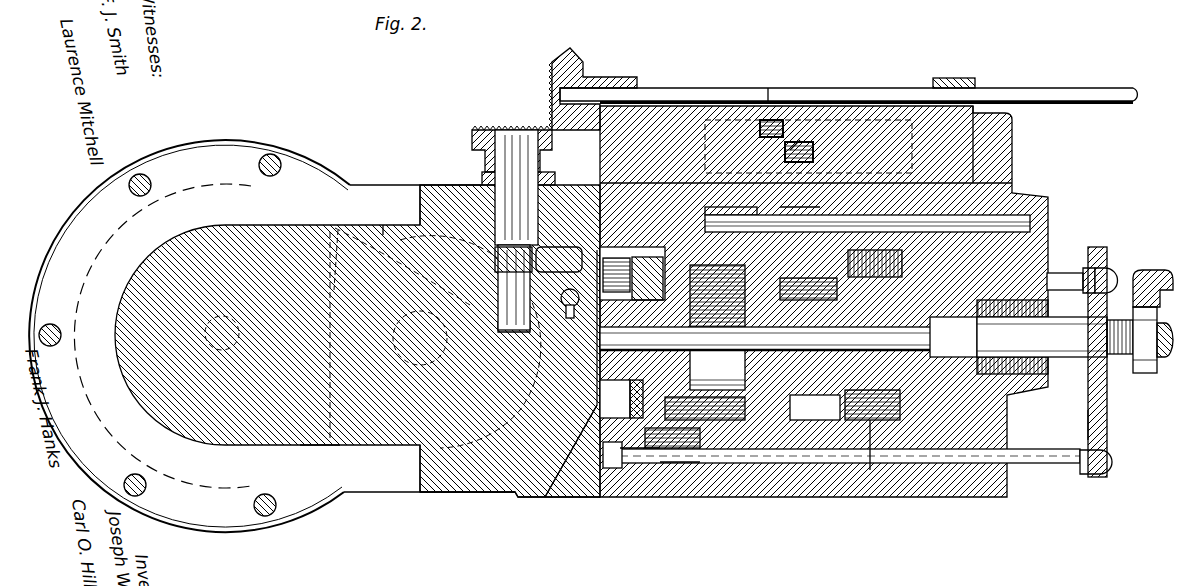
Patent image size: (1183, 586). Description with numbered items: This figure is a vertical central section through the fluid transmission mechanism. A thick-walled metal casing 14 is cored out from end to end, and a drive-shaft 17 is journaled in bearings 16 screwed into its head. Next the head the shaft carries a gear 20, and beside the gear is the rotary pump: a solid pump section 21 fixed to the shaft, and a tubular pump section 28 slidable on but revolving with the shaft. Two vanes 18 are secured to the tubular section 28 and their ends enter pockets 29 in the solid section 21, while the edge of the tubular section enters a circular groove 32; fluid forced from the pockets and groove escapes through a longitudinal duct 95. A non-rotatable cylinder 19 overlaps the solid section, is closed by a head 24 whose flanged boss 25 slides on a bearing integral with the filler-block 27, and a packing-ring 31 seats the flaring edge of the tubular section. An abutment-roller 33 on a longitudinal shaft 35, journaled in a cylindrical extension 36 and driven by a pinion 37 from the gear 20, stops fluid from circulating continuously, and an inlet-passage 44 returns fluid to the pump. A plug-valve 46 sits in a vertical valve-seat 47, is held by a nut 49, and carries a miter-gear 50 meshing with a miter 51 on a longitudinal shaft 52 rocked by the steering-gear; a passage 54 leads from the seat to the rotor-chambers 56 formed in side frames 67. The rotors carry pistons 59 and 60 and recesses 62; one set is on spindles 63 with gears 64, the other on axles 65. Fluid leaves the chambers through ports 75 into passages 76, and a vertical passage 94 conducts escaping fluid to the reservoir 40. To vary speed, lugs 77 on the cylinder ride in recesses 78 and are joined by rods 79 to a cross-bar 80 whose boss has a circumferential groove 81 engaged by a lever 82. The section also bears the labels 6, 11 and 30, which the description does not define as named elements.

The valve disc 6 is at (493, 262).
The rod 11 is at (788, 278).
The casing 14 is at (809, 112).
The bearings 16 is at (1048, 388).
The drive-shaft 17 is at (1055, 337).
The vanes 18 is at (788, 470).
The cylinder 19 is at (720, 450).
The gear 20 is at (989, 337).
The solid pump section 21 is at (884, 300).
The head 24 is at (790, 186).
The flanged boss 25 is at (592, 450).
The filler-block 27 is at (490, 455).
The tubular pump section 28 is at (735, 430).
The pockets 29 is at (872, 432).
The spring 30 is at (717, 327).
The packing-ring 31 is at (655, 452).
The circular groove 32 is at (816, 300).
The abutment-roller 33 is at (850, 172).
The longitudinal shaft 35 is at (1030, 225).
The cylindrical extension 36 is at (650, 220).
The pinion 37 is at (1000, 196).
The reservoir 40 is at (672, 88).
The inlet-passage 44 is at (758, 128).
The plug-valve 46 is at (516, 230).
The valve-seat 47 is at (505, 334).
The nut 49 is at (482, 178).
The miter-gear 50 is at (476, 128).
The miter 51 is at (560, 60).
The longitudinal shaft 52 is at (768, 88).
The passage 54 is at (383, 225).
The rotor-chambers 56 is at (339, 228).
The piston 59 is at (436, 238).
The piston 60 is at (118, 358).
The recesses 62 is at (245, 235).
The spindles 63 is at (428, 362).
The gears 64 is at (528, 360).
The axles 65 is at (357, 341).
The side frames 67 is at (228, 530).
The ports 75 is at (318, 446).
The passages 76 is at (571, 318).
The lugs 77 is at (625, 478).
The recesses 78 is at (668, 465).
The rods 79 is at (1046, 480).
The cross-bar 80 is at (1086, 426).
The circumferential groove 81 is at (1143, 375).
The lever 82 is at (1150, 275).
The vertical passage 94 is at (797, 148).
The longitudinal duct 95 is at (822, 470).